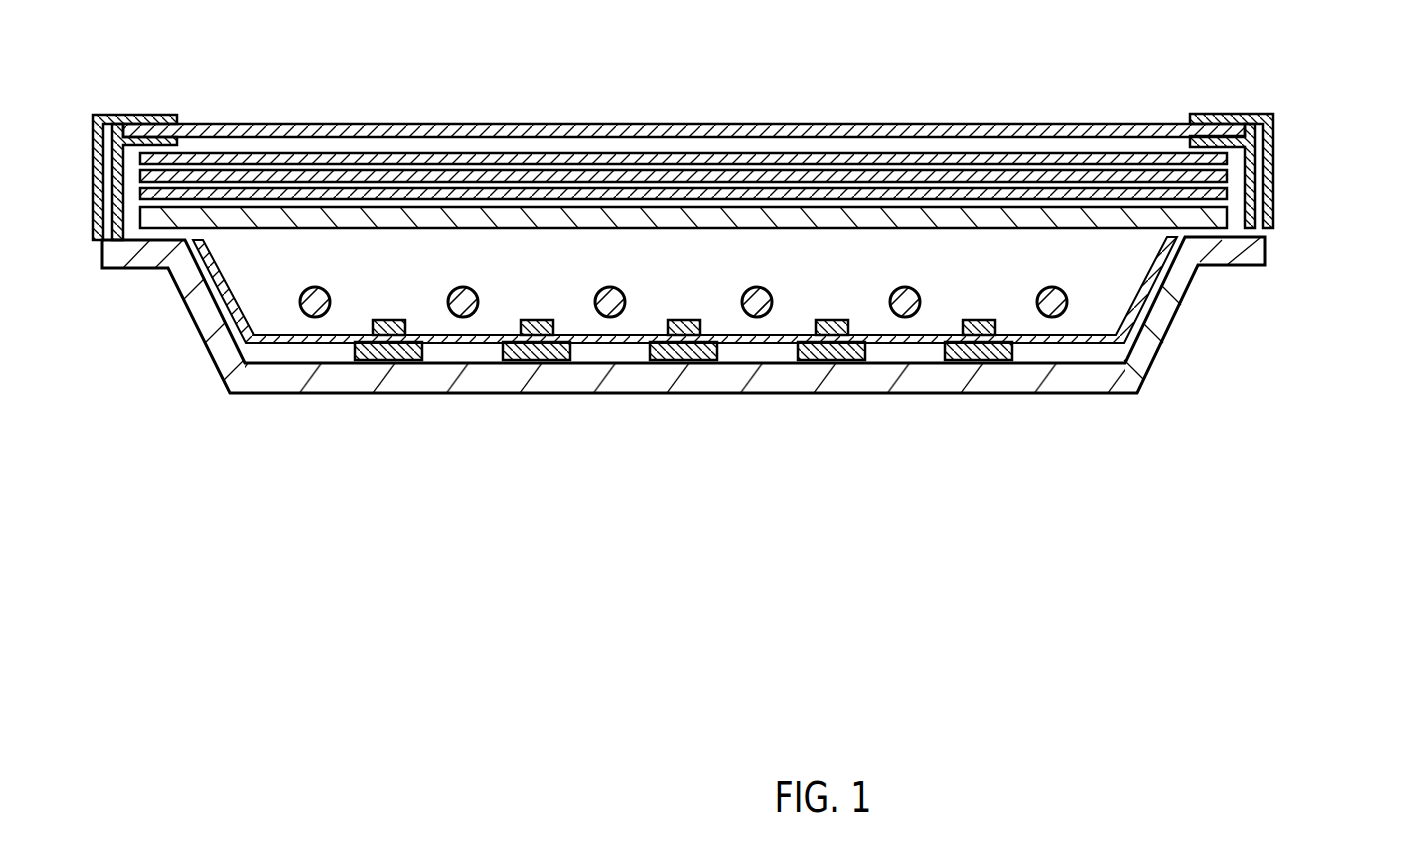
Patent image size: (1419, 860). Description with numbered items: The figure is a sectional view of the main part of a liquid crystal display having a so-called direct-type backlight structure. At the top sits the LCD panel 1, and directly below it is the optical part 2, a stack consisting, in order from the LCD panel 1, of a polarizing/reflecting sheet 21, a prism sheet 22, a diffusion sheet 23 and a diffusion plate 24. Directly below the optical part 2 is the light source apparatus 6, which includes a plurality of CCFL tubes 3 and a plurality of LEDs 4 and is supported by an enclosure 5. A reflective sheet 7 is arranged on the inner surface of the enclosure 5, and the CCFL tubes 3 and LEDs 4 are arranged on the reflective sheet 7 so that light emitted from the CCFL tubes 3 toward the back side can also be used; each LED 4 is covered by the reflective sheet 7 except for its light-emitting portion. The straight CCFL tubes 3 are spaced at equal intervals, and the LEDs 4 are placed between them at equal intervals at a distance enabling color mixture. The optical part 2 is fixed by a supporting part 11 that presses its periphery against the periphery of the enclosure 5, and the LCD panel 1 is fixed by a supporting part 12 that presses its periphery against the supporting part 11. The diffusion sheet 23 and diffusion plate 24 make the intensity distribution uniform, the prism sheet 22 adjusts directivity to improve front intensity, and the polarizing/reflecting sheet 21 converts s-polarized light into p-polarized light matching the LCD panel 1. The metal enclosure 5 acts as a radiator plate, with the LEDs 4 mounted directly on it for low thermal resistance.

The LCD panel 1 is at (907, 124).
The optical part 2 is at (765, 213).
The polarizing/reflecting sheet 21 is at (1235, 160).
The prism sheet 22 is at (1232, 178).
The diffusion sheet 23 is at (1232, 195).
The diffusion plate 24 is at (738, 248).
The CCFL tube 3 is at (317, 317).
The LED 4 is at (683, 385).
The enclosure 5 is at (1068, 378).
The light source apparatus 6 is at (683, 412).
The reflective sheet 7 is at (928, 343).
The supporting part 11 is at (151, 118).
The supporting part 12 is at (103, 114).